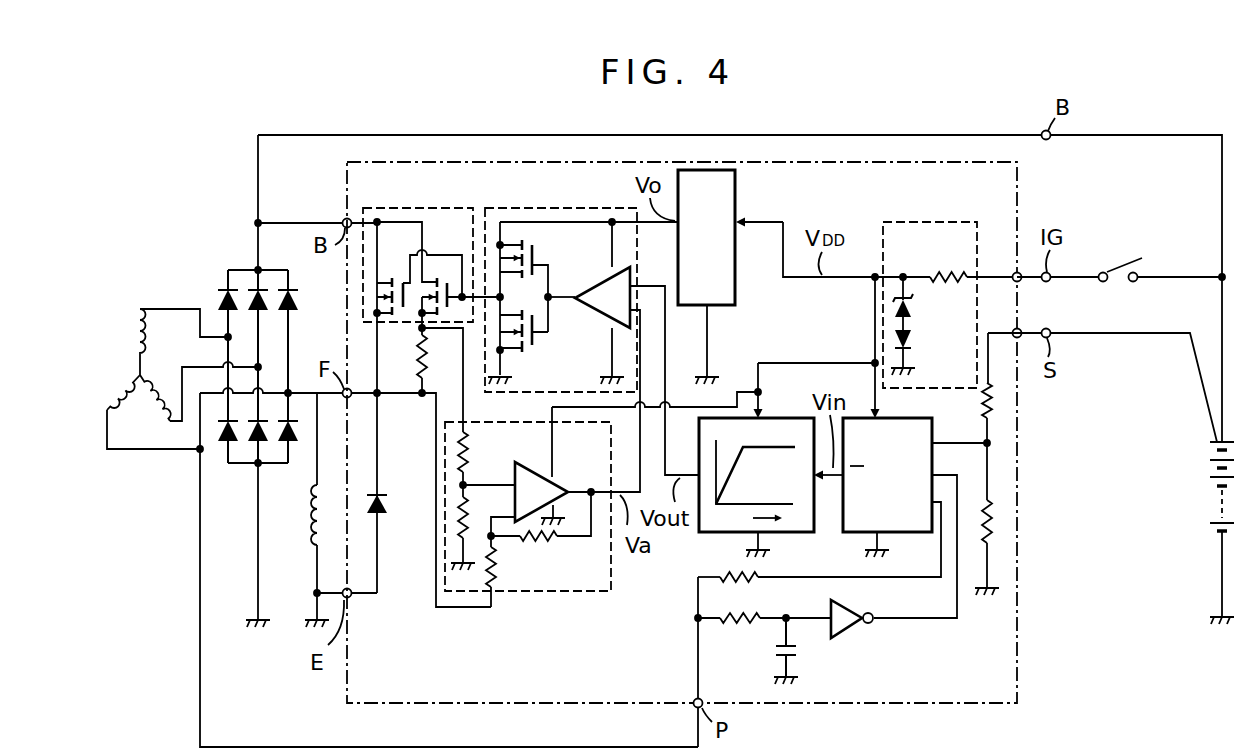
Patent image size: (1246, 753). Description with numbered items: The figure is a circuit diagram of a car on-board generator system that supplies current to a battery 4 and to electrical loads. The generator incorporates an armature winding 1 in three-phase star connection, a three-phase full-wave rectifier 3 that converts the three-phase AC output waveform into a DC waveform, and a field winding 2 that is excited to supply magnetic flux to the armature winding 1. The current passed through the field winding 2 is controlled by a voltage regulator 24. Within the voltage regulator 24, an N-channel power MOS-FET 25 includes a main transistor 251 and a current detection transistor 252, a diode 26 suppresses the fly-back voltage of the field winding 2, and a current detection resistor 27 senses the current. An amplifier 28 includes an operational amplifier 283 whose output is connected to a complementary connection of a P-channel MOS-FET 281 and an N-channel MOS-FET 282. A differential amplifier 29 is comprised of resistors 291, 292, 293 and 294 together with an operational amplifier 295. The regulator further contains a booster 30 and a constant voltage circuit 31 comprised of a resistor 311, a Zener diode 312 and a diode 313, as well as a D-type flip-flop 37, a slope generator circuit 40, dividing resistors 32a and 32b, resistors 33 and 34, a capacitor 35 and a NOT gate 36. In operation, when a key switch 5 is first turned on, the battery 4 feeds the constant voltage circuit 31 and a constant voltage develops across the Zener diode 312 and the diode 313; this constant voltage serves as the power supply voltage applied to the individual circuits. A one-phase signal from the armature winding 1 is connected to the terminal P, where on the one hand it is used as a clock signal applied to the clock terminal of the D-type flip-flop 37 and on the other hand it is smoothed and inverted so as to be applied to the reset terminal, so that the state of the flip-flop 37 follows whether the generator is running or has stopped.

The armature winding 1 is at (141, 392).
The field winding 2 is at (315, 516).
The three-phase full-wave rectifier 3 is at (246, 470).
The battery 4 is at (1205, 478).
The key switch 5 is at (1128, 258).
The voltage regulator 24 is at (410, 705).
The N-channel power MOS-FET 25 is at (431, 271).
The main transistor 251 is at (398, 272).
The current detection transistor 252 is at (445, 272).
The diode 26 is at (386, 506).
The current detection resistor 27 is at (426, 355).
The amplifier 28 is at (581, 282).
The P-channel MOS-FET 281 is at (530, 248).
The N-channel MOS-FET 282 is at (532, 348).
The operational amplifier 283 is at (592, 306).
The differential amplifier 29 is at (499, 528).
The resistor 291 is at (468, 440).
The resistor 292 is at (458, 506).
The resistor 293 is at (494, 576).
The resistor 294 is at (535, 543).
The operational amplifier 295 is at (556, 478).
The booster 30 is at (737, 295).
The constant voltage circuit 31 is at (950, 283).
The resistor 311 is at (942, 272).
The Zener diode 312 is at (908, 308).
The diode 313 is at (909, 340).
The dividing resistor 32a is at (1000, 400).
The dividing resistor 32b is at (1000, 525).
The resistor 33 is at (750, 585).
The resistor 34 is at (740, 627).
The capacitor 35 is at (800, 652).
The NOT gate 36 is at (852, 628).
The D-type flip-flop 37 is at (898, 535).
The slope generator circuit 40 is at (722, 534).